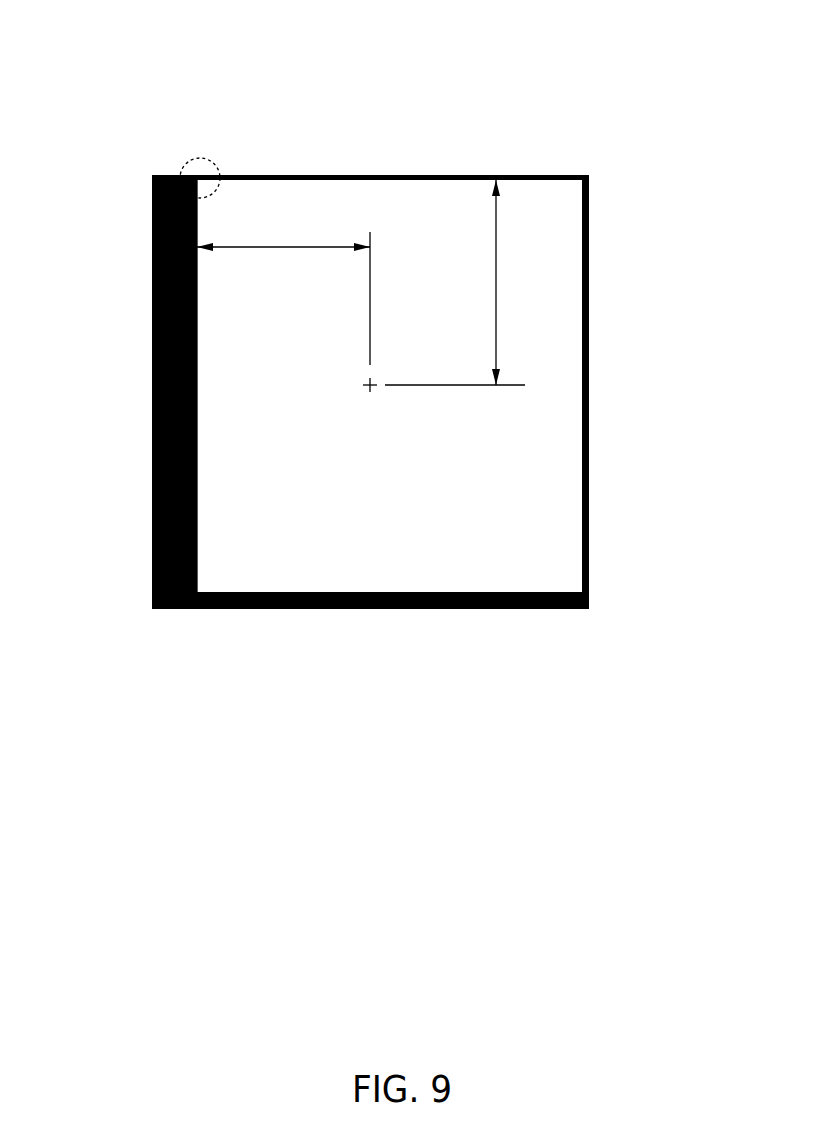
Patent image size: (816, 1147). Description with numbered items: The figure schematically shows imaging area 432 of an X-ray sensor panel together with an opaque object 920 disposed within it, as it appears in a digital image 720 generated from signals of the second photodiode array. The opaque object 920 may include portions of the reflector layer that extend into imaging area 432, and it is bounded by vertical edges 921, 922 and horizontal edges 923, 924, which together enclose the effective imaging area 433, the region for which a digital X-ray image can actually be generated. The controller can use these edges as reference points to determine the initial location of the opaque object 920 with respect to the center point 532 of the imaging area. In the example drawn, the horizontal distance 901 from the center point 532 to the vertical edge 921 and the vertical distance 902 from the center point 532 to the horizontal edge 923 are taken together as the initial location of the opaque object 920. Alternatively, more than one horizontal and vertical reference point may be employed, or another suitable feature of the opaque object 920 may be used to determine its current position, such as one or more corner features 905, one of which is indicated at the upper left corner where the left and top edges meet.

The digital image 720 is at (115, 60).
The imaging area 432 is at (604, 166).
The corner features 905 is at (200, 158).
The horizontal edge 923 is at (440, 180).
The horizontal distance 901 is at (257, 247).
The vertical distance 902 is at (496, 258).
The opaque object 920 is at (152, 378).
The center point 532 is at (358, 400).
The vertical edge 922 is at (582, 438).
The effective imaging area 433 is at (391, 497).
The vertical edge 921 is at (197, 502).
The horizontal edge 924 is at (462, 592).